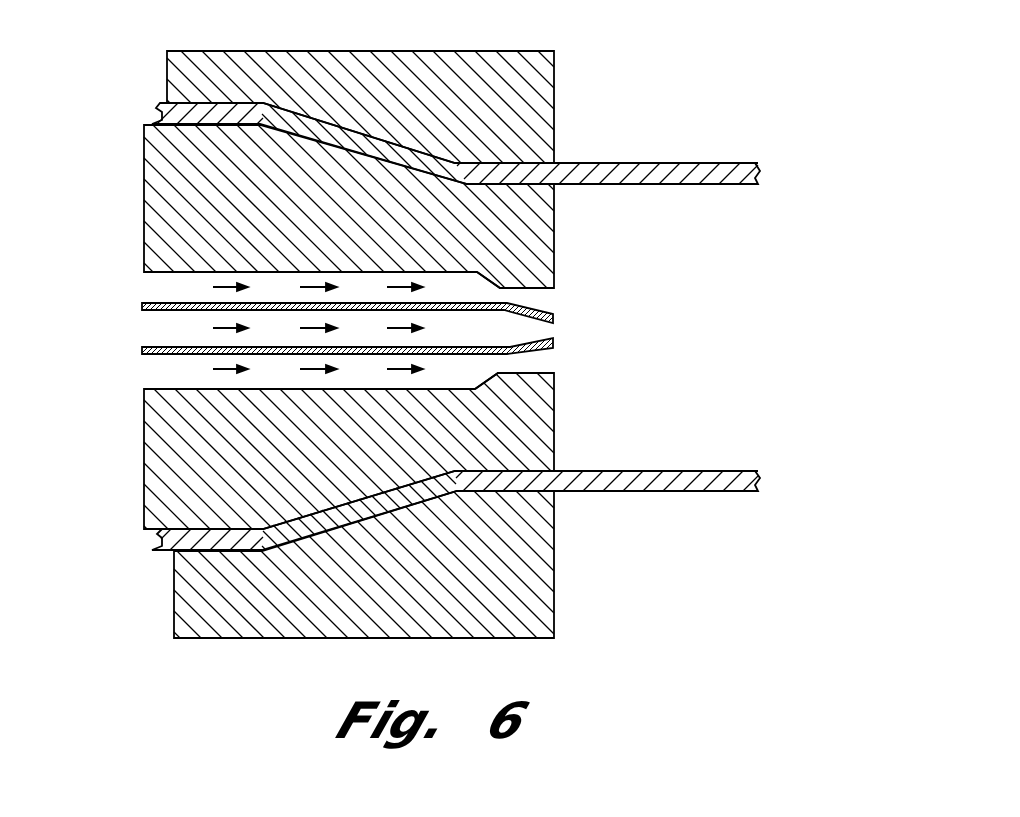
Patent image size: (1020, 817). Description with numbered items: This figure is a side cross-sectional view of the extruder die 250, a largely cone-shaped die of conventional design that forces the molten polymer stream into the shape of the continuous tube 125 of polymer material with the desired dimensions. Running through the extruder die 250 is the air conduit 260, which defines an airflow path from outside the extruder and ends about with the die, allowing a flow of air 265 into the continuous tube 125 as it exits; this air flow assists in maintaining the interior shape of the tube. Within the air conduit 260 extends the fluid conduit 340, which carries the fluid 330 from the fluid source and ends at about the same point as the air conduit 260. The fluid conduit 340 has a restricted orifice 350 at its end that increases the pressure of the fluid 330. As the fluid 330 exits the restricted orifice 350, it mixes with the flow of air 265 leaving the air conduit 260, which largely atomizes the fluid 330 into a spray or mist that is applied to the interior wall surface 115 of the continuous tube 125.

The extruder die 250 is at (554, 80).
The air conduit 260 is at (540, 299).
The interior wall surface 115 is at (655, 163).
The continuous tube 125 is at (704, 167).
The fluid conduit 340 is at (540, 306).
The restricted orifice 350 is at (540, 347).
The flow of air 265 is at (213, 287).
The fluid 330 is at (213, 328).